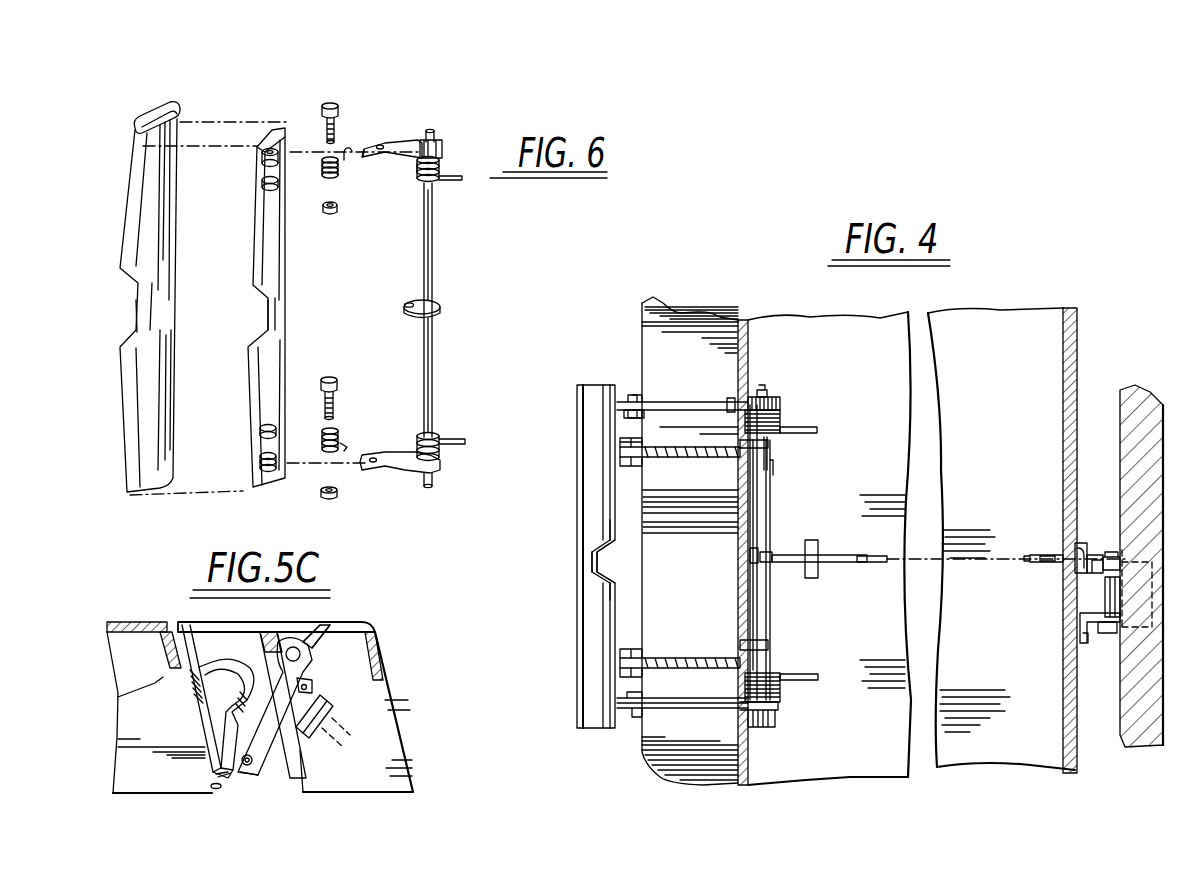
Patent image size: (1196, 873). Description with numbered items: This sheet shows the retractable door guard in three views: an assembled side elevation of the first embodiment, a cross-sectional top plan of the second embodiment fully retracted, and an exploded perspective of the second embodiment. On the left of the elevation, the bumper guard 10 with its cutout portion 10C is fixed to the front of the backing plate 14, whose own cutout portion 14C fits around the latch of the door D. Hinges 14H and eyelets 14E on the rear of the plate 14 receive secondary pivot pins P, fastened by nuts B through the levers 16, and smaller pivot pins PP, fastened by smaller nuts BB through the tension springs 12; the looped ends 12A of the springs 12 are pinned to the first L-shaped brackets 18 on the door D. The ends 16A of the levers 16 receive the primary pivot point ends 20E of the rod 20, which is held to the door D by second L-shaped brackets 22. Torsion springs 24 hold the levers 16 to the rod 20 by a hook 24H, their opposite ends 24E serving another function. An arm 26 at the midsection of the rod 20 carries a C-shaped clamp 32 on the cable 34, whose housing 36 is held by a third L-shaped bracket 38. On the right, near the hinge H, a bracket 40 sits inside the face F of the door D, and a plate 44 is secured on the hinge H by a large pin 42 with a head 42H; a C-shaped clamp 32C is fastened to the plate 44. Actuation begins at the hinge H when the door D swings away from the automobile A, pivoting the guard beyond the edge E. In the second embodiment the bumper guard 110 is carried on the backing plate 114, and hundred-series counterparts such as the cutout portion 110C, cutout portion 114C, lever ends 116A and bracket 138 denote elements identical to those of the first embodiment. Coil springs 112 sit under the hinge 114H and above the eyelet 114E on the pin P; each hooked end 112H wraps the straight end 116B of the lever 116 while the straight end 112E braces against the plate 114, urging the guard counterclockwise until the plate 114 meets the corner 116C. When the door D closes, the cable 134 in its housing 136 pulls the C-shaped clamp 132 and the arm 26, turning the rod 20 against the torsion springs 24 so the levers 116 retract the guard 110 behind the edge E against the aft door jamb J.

In FIG. 4, the bumper guard 10 is at (595, 528).
In FIG. 4, the cutout portion 10C is at (597, 562).
In FIG. 4, the tension springs 12 is at (730, 570).
In FIG. 4, the looped ends of the tension springs 12A is at (770, 472).
In FIG. 4, the backing plate 14 is at (617, 532).
In FIG. 4, the cutout portion 14C is at (617, 565).
In FIG. 4, the eyelets 14E is at (617, 520).
In FIG. 4, the hinges 14H is at (625, 398).
In FIG. 4, the levers 16 is at (668, 402).
In FIG. 4, the ends of the levers 16A is at (782, 402).
In FIG. 4, the first L-shaped brackets 18 is at (748, 458).
In FIG. 6, the rod 20 is at (435, 265).
In FIG. 4, the rod 20 is at (760, 630).
In FIG. 6, the primary pivot point ends 20E is at (434, 137).
In FIG. 4, the second L-shaped brackets 22 is at (770, 395).
In FIG. 6, the torsion springs 24 is at (441, 165).
In FIG. 4, the torsion springs 24 is at (782, 422).
In FIG. 6, the opposite ends of the torsion springs 24E is at (452, 181).
In FIG. 4, the opposite ends of the torsion springs 24E is at (800, 435).
In FIG. 6, the hook 24H is at (413, 164).
In FIG. 4, the hook 24H is at (730, 398).
In FIG. 6, the arm 26 is at (411, 316).
In FIG. 5C, the arm 26 is at (290, 703).
In FIG. 4, the C-shaped clamp 32 is at (790, 552).
In FIG. 4, the C-shaped clamp 32C is at (1075, 548).
In FIG. 4, the cable 34 is at (800, 552).
In FIG. 4, the housing 36 is at (862, 565).
In FIG. 4, the third L-shaped bracket 38 is at (815, 570).
In FIG. 4, the bracket 40 is at (1092, 554).
In FIG. 4, the large pin 42 is at (1110, 585).
In FIG. 4, the head 42H is at (1107, 597).
In FIG. 4, the plate 44 is at (1110, 556).
In FIG. 6, the bumper guard 110 is at (148, 112).
In FIG. 5C, the bumper guard 110 is at (198, 680).
In FIG. 6, the hook member notch 110C is at (140, 305).
In FIG. 6, the coil springs 112 is at (326, 177).
In FIG. 6, the straight end 112E is at (339, 432).
In FIG. 6, the hooked end 112H is at (349, 148).
In FIG. 5C, the hooked end 112H is at (280, 755).
In FIG. 6, the backing plate 114 is at (268, 128).
In FIG. 5C, the backing plate 114 is at (285, 740).
In FIG. 6, the lever notch 114C is at (270, 320).
In FIG. 6, the eyelet 114E is at (263, 190).
In FIG. 6, the hinge 114H is at (262, 160).
In FIG. 6, the lever 116 is at (406, 142).
In FIG. 5C, the lever 116 is at (265, 685).
In FIG. 6, the bracket plate 116A is at (444, 150).
In FIG. 6, the straight end 116B is at (383, 144).
In FIG. 5C, the straight end 116B is at (268, 762).
In FIG. 6, the corner 116C is at (362, 160).
In FIG. 5C, the corner 116C is at (250, 775).
In FIG. 5C, the C-shaped clamp 132 is at (312, 682).
In FIG. 5C, the cable 134 is at (379, 668).
In FIG. 5C, the housing 136 is at (345, 735).
In FIG. 5C, the actuator block 138 is at (334, 712).
In FIG. 5C, the automobile A is at (123, 625).
In FIG. 4, the automobile A is at (1112, 408).
In FIG. 6, the nuts B is at (334, 214).
In FIG. 4, the nuts B is at (644, 414).
In FIG. 4, the smaller nuts BB is at (643, 458).
In FIG. 5C, the door D is at (398, 700).
In FIG. 4, the door D is at (770, 318).
In FIG. 5C, the edge of the door E is at (200, 614).
In FIG. 4, the edge of the door E is at (640, 335).
In FIG. 5C, the outer face of the door F is at (305, 630).
In FIG. 4, the hinge H is at (1152, 580).
In FIG. 5C, the aft door jamb J is at (210, 786).
In FIG. 6, the secondary pivot pins P is at (322, 118).
In FIG. 4, the secondary pivot pins P is at (636, 396).
In FIG. 4, the smaller pivot pins PP is at (625, 455).